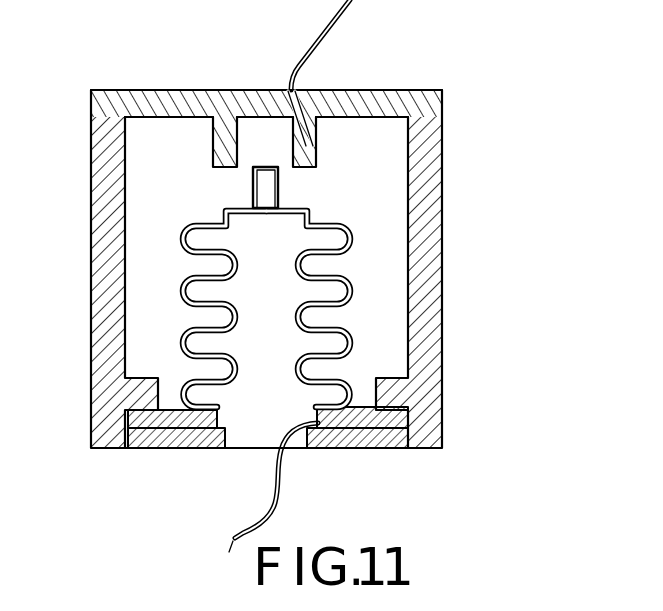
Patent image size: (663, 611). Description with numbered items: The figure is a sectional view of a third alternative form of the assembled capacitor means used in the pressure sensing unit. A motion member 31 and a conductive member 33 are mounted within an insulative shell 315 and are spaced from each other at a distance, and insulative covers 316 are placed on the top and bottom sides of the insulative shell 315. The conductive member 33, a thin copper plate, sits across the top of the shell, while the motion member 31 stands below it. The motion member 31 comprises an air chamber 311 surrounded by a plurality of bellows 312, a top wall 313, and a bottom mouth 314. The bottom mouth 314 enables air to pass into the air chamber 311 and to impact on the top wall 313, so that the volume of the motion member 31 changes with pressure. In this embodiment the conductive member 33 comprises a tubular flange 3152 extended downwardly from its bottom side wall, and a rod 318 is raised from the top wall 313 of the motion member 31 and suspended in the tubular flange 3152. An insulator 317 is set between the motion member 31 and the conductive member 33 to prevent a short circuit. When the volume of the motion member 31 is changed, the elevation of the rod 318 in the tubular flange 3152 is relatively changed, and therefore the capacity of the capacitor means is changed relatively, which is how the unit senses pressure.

The conductive member 33 is at (147, 106).
The tubular flange 3152 is at (310, 145).
The rod 318 is at (267, 183).
The insulator 317 is at (278, 191).
The insulative shell 315 is at (432, 250).
The air chamber 311 is at (285, 309).
The bellows 312 is at (285, 309).
The top wall 313 is at (260, 217).
The motion member 31 is at (285, 309).
The insulative cover 316 is at (152, 445).
The bottom mouth 314 is at (275, 413).